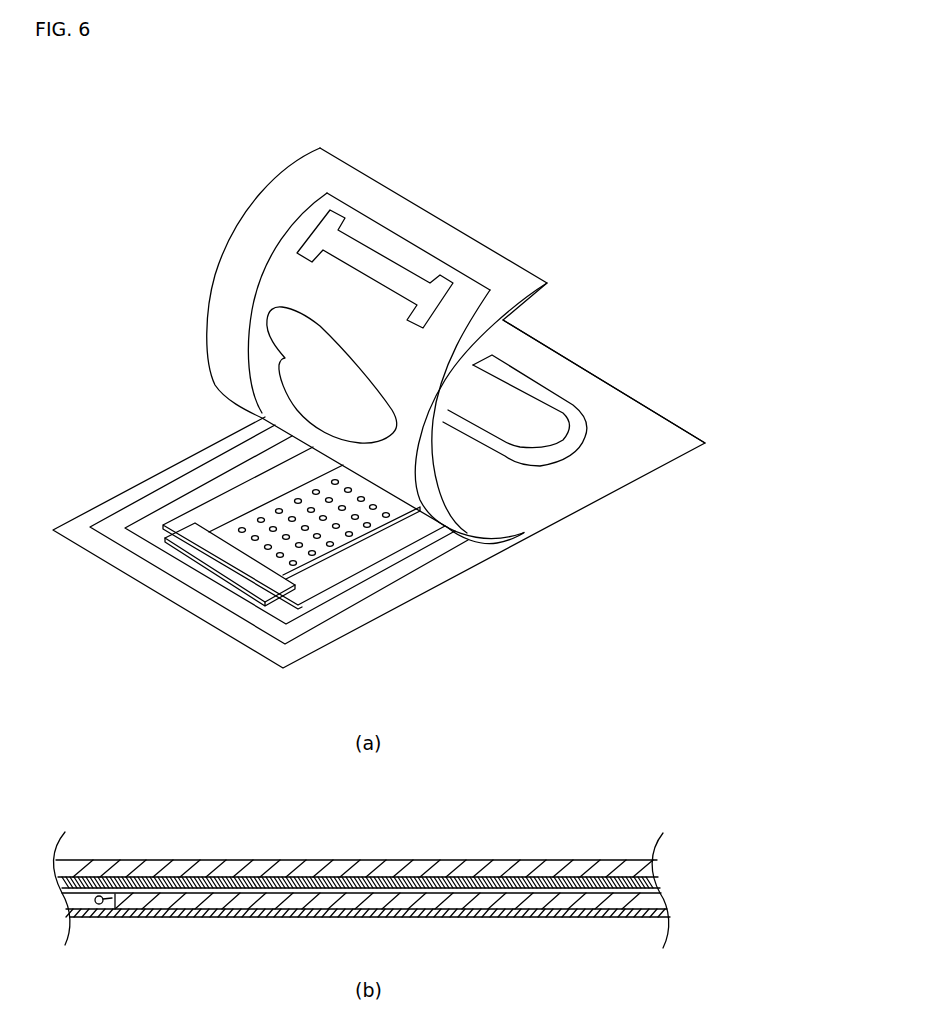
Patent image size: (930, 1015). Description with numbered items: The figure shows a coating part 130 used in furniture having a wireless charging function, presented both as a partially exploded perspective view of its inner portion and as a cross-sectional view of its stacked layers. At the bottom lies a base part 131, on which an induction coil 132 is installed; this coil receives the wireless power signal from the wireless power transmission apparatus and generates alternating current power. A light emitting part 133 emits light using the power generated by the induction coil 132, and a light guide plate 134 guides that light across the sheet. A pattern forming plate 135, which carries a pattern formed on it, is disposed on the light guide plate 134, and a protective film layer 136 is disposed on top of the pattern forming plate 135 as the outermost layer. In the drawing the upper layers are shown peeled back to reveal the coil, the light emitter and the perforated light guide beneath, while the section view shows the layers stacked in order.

The coating part 130 is at (622, 118).
The base part 131 is at (253, 637).
The induction coil 132 is at (173, 497).
The light emitting part 133 is at (225, 565).
The light guide plate 134 is at (375, 523).
The pattern forming plate 135 is at (280, 277).
The protective film layer 136 is at (413, 213).